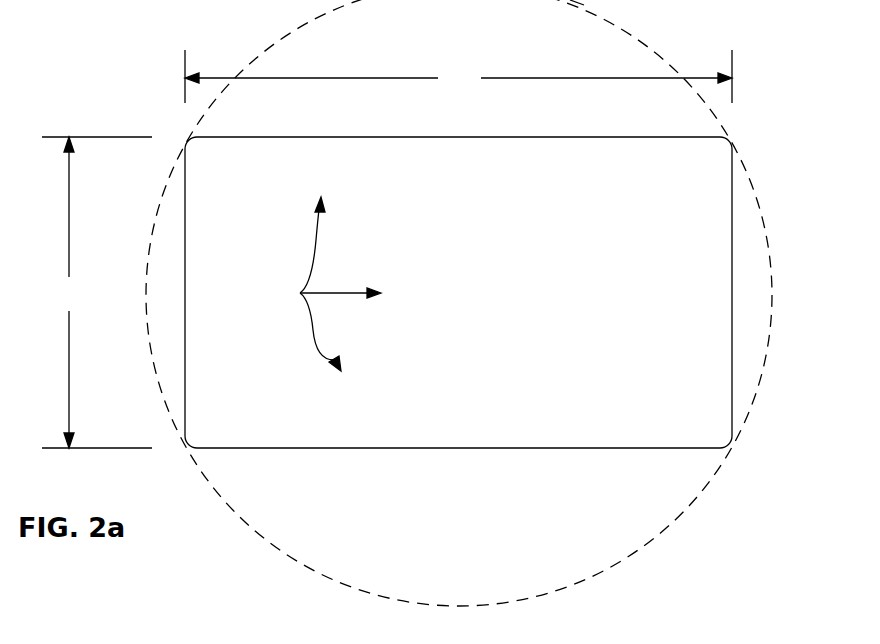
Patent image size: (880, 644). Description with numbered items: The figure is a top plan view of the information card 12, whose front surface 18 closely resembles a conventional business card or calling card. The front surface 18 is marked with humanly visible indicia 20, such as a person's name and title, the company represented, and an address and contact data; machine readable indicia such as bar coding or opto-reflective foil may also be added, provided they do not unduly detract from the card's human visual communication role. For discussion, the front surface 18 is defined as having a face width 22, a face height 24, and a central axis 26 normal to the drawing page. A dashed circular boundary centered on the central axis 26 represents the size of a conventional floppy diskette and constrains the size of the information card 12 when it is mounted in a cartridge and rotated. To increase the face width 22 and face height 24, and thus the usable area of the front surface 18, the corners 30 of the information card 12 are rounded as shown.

The information card 12 is at (460, 450).
The front surface 18 is at (591, 167).
The humanly visible indicia 20 is at (300, 293).
The face width 22 is at (458, 76).
The face height 24 is at (97, 292).
The central axis 26 is at (462, 292).
The corners 30 is at (735, 140).